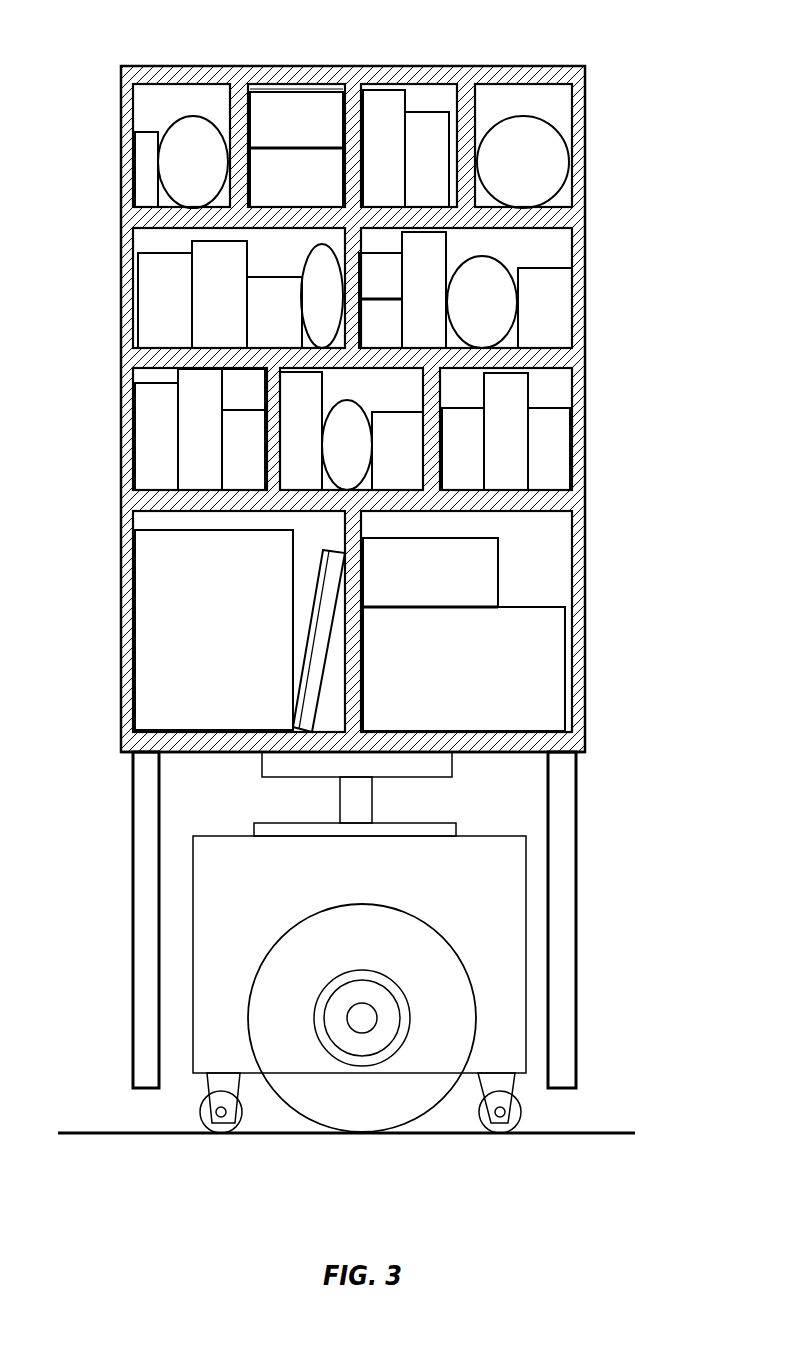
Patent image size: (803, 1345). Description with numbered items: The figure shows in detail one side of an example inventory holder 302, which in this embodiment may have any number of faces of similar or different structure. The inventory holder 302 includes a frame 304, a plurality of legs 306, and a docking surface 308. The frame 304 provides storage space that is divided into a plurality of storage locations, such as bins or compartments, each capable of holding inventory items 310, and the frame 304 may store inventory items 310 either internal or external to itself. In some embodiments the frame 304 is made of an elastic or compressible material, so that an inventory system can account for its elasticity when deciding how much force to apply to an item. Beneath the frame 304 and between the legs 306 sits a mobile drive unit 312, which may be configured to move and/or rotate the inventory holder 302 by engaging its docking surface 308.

The inventory holder 302 is at (383, 382).
The frame 304 is at (580, 172).
The legs 306 is at (138, 818).
The docking surface 308 is at (433, 740).
The inventory items 310 is at (503, 408).
The mobile drive unit 312 is at (495, 857).